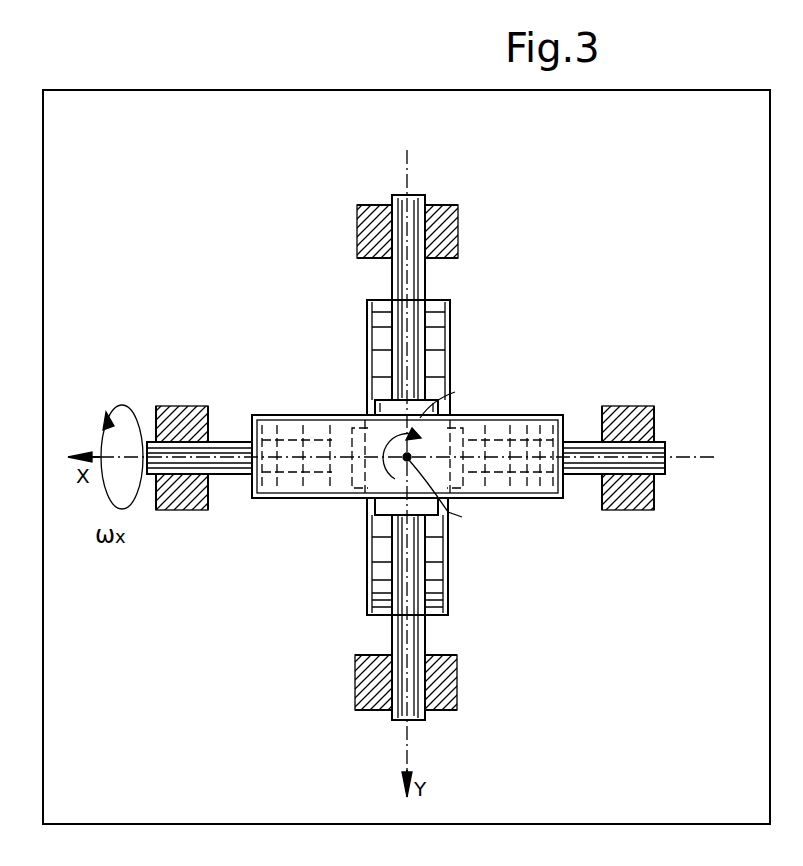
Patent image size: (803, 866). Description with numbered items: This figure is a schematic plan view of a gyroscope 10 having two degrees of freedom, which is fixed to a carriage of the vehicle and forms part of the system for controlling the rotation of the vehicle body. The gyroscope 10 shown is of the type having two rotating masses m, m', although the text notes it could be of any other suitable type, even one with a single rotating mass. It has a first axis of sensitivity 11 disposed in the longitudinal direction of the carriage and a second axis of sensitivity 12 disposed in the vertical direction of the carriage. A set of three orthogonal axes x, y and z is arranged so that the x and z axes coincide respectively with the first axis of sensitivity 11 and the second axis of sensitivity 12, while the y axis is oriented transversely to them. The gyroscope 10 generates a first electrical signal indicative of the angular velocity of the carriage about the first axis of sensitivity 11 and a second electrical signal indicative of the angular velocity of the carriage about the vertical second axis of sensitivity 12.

The gyroscope 10 is at (518, 340).
The first axis of sensitivity 11 is at (231, 460).
The second axis of sensitivity 12 is at (364, 413).
The rotating mass m is at (433, 349).
The rotating mass m' is at (472, 488).